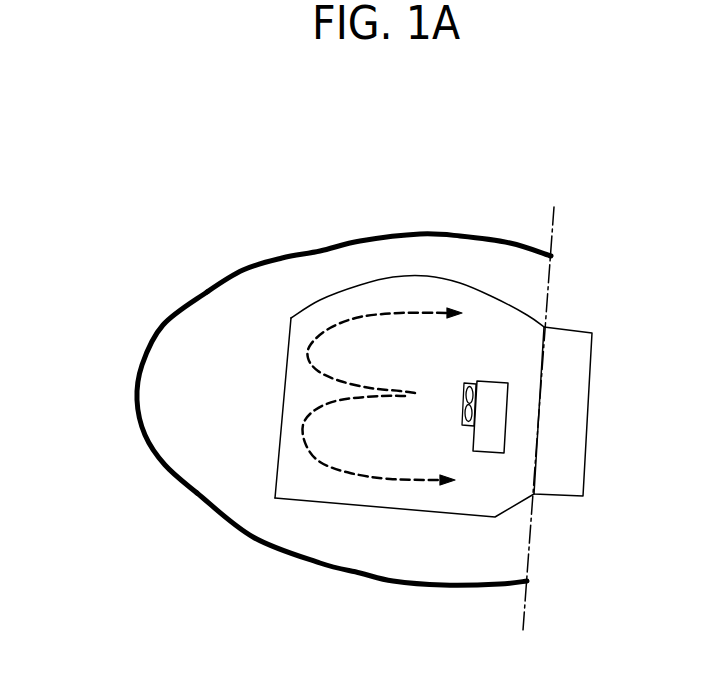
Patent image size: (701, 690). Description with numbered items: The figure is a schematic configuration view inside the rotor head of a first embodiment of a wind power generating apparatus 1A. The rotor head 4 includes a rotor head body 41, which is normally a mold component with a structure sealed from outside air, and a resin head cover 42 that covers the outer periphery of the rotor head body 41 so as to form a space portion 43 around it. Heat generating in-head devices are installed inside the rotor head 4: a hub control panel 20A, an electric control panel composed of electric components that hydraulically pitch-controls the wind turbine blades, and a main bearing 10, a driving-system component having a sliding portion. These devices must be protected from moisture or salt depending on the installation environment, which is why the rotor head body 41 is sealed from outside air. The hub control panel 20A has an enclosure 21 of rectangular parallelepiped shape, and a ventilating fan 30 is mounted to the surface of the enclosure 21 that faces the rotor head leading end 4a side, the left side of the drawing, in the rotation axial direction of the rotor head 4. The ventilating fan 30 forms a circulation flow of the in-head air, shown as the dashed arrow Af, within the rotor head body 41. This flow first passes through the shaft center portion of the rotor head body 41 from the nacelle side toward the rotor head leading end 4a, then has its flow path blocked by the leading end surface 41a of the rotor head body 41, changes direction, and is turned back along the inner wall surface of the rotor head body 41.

The wind power generating apparatus 1A is at (458, 160).
The rotor head 4 is at (197, 492).
The rotor head leading end 4a is at (137, 379).
The head cover 42 is at (282, 257).
The space portion 43 is at (388, 552).
The rotor head body 41 is at (389, 277).
The leading end surface 41a is at (285, 395).
The main bearing 10 is at (580, 330).
The hub control panel 20A is at (497, 381).
The enclosure 21 is at (483, 454).
The ventilating fan 30 is at (463, 412).
The circulation flow of in-head air Af is at (328, 368).